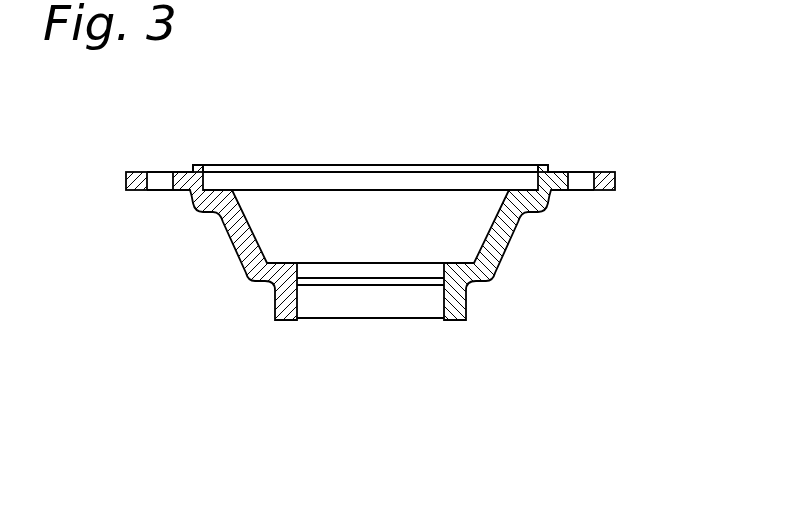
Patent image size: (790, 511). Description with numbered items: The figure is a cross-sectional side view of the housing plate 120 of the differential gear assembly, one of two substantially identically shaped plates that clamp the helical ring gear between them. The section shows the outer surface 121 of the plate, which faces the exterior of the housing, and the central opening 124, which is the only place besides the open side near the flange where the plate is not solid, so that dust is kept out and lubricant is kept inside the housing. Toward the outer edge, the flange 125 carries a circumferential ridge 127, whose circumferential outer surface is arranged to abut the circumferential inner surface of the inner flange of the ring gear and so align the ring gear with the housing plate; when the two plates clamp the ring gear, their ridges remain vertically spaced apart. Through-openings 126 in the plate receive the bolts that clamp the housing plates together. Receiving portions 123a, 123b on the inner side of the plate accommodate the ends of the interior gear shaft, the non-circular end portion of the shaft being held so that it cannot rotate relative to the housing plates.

The housing plate 120 is at (573, 326).
The outer surface 121 is at (500, 265).
The receiving portion 123a is at (217, 189).
The receiving portion 123b is at (524, 188).
The opening 124 is at (386, 357).
The flange 125 is at (608, 172).
The through-opening 126 is at (588, 203).
The circumferential ridge 127 is at (196, 165).